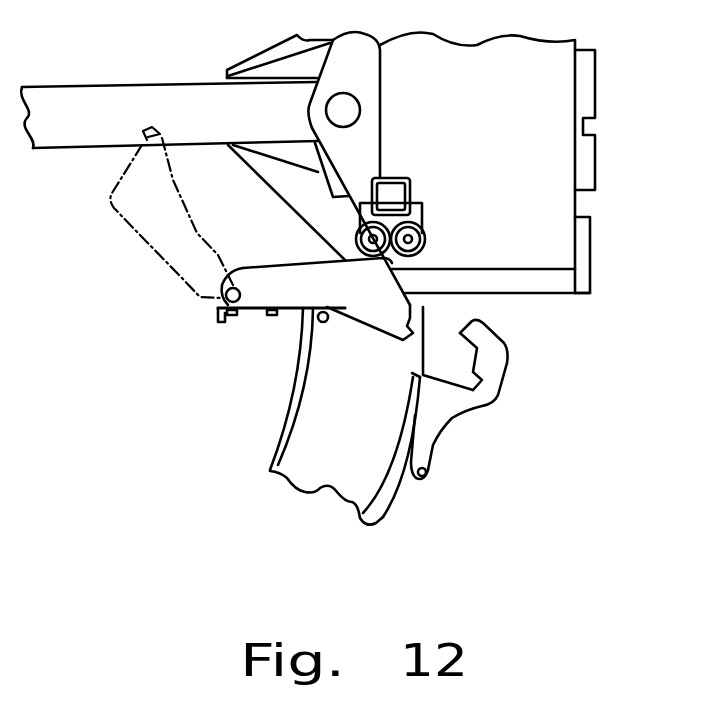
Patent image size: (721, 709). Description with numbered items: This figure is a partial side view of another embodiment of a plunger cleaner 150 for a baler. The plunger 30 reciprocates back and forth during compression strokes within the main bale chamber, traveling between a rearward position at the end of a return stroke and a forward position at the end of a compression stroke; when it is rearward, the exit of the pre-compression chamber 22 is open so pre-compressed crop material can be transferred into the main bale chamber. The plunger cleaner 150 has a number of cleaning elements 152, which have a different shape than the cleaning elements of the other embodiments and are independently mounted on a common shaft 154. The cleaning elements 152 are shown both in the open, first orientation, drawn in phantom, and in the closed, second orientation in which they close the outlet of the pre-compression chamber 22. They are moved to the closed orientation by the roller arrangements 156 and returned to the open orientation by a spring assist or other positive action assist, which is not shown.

The pre-compression chamber 22 is at (357, 468).
The plunger 30 is at (547, 110).
The plunger cleaner 150 is at (257, 339).
The cleaning elements 152 is at (127, 225).
The common shaft 154 is at (217, 299).
The roller arrangements 156 is at (432, 227).